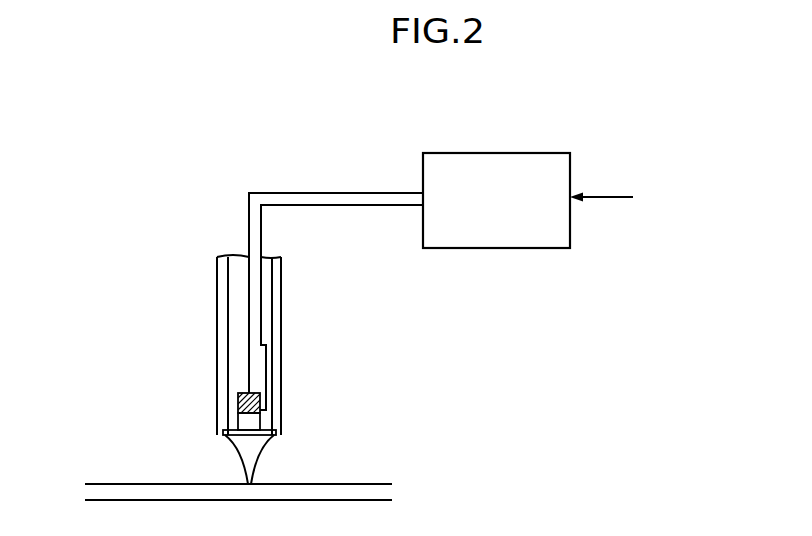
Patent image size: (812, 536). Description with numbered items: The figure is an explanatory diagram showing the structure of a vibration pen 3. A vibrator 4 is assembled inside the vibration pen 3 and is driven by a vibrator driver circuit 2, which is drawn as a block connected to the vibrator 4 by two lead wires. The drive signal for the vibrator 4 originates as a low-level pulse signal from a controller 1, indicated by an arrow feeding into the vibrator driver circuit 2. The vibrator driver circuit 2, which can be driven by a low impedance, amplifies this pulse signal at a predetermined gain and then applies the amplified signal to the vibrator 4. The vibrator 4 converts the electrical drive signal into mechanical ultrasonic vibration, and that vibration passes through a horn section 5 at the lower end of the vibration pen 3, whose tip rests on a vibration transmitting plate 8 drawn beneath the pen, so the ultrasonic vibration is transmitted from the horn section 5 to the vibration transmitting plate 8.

The controller 1 is at (687, 196).
The vibrator driver circuit 2 is at (479, 153).
The vibration pen 3 is at (217, 303).
The vibrator 4 is at (237, 400).
The horn section 5 is at (239, 455).
The vibration transmitting plate 8 is at (325, 484).